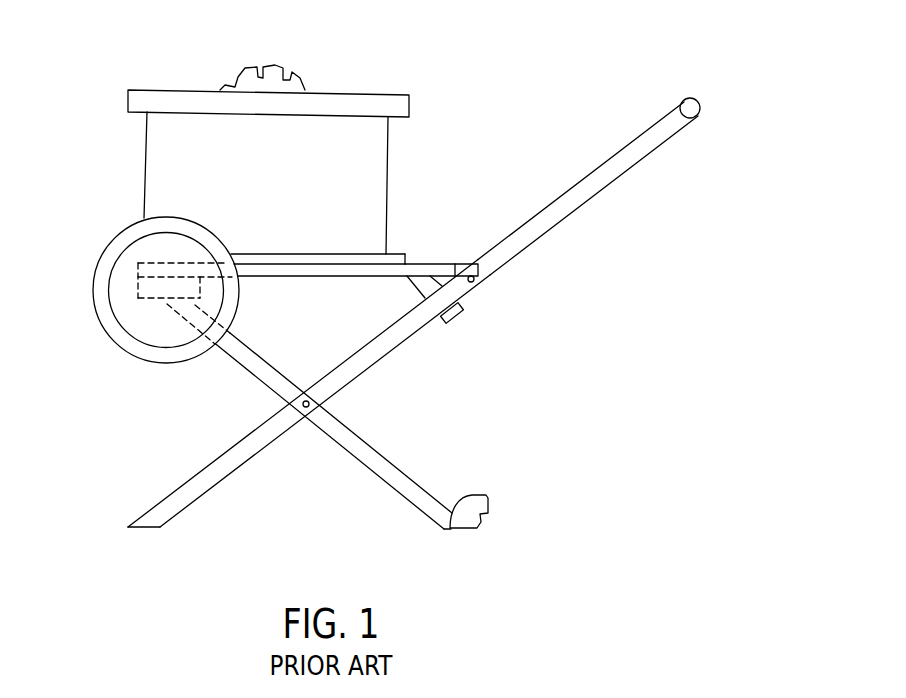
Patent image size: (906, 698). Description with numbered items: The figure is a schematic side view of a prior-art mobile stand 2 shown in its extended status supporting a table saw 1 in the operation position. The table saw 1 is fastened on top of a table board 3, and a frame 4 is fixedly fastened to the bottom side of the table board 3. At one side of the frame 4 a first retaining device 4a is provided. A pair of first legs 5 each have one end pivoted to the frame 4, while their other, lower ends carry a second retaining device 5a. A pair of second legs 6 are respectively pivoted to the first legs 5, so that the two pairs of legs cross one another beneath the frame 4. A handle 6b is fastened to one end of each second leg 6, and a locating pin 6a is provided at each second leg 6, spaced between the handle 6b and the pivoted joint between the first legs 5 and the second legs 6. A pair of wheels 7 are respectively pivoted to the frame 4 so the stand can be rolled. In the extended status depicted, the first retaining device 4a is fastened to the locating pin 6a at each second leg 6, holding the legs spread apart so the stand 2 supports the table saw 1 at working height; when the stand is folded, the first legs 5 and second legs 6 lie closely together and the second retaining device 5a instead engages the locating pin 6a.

The table saw 1 is at (180, 80).
The stand 2 is at (661, 159).
The table board 3 is at (397, 254).
The frame 4 is at (440, 264).
The first retaining device 4a is at (480, 276).
The first legs 5 is at (388, 460).
The second retaining device 5a is at (490, 500).
The second legs 6 is at (188, 481).
The locating pin 6a is at (472, 283).
The handle 6b is at (692, 109).
The wheels 7 is at (103, 250).